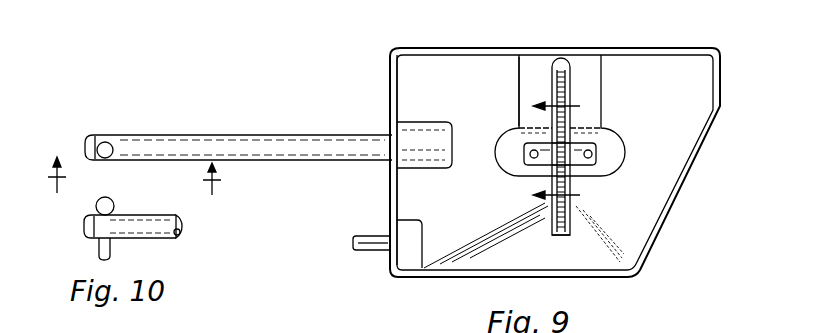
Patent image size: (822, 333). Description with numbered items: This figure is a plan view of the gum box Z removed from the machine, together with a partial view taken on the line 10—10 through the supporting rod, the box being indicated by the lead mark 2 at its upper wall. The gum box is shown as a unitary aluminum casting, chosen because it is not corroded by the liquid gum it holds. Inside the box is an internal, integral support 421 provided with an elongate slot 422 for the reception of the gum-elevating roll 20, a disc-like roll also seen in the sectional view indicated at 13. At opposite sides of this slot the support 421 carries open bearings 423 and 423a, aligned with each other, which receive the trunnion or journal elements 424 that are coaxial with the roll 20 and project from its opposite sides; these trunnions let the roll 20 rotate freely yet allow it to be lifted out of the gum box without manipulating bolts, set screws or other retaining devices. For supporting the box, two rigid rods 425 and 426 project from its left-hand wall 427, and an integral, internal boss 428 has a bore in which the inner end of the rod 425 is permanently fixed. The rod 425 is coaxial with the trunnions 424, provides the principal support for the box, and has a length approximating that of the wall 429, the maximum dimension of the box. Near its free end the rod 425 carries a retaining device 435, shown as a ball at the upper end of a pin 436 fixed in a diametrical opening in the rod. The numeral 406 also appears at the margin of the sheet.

In FIG. 9, the section line indicator 2 is at (612, 50).
In FIG. 10, the section line indicator 10 is at (138, 188).
In FIG. 9, the section arrows 13 is at (568, 148).
In FIG. 9, the gum-elevating roll 20 is at (557, 233).
In FIG. 9, the reference label 406 is at (676, 328).
In FIG. 9, the internal, integral support 421 is at (518, 106).
In FIG. 9, the elongate slot 422 is at (561, 58).
In FIG. 9, the open bearing 423 is at (526, 165).
In FIG. 9, the open bearing 423a is at (604, 158).
In FIG. 9, the trunnion or journal element 424 is at (573, 147).
In FIG. 10, the rigid rod 425 is at (330, 138).
In FIG. 9, the rigid rod 426 is at (366, 245).
In FIG. 9, the left-hand wall 427 is at (390, 72).
In FIG. 9, the integral, internal boss 428 is at (433, 130).
In FIG. 9, the wall 429 is at (683, 50).
In FIG. 10, the retaining device 435 is at (109, 199).
In FIG. 10, the pin 436 is at (98, 252).